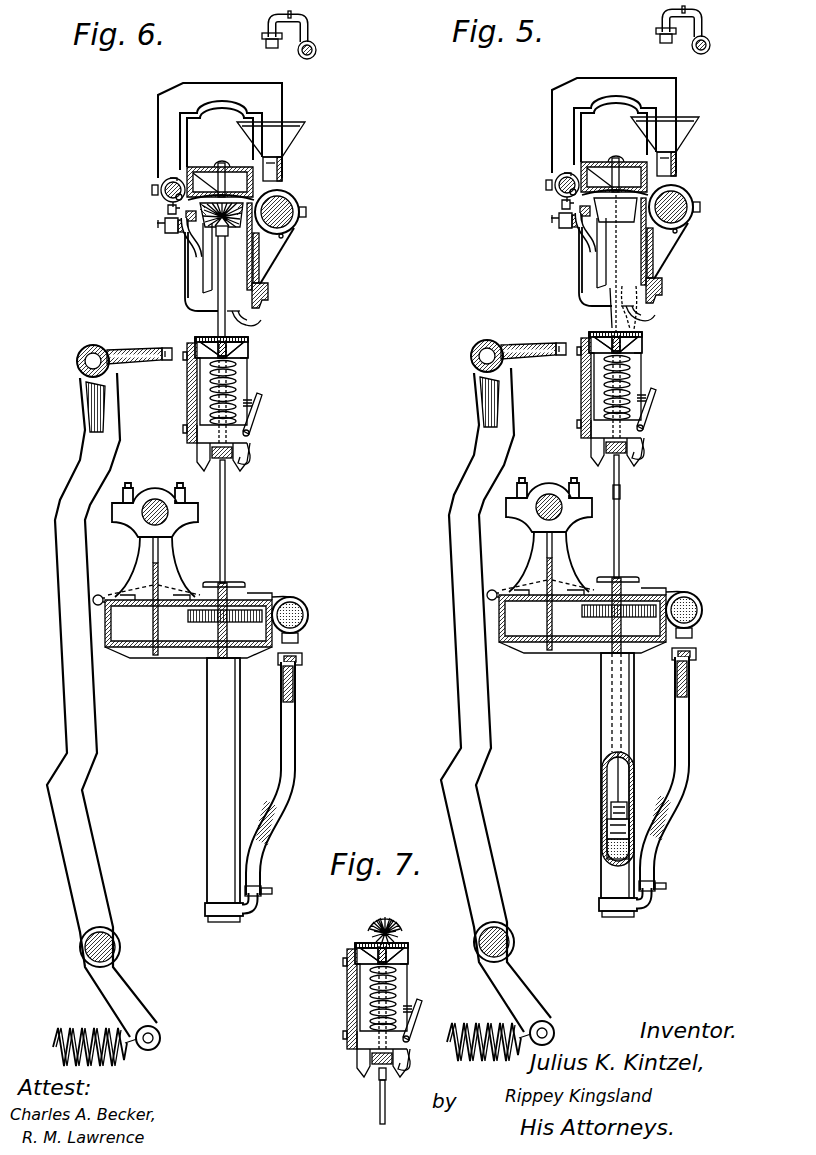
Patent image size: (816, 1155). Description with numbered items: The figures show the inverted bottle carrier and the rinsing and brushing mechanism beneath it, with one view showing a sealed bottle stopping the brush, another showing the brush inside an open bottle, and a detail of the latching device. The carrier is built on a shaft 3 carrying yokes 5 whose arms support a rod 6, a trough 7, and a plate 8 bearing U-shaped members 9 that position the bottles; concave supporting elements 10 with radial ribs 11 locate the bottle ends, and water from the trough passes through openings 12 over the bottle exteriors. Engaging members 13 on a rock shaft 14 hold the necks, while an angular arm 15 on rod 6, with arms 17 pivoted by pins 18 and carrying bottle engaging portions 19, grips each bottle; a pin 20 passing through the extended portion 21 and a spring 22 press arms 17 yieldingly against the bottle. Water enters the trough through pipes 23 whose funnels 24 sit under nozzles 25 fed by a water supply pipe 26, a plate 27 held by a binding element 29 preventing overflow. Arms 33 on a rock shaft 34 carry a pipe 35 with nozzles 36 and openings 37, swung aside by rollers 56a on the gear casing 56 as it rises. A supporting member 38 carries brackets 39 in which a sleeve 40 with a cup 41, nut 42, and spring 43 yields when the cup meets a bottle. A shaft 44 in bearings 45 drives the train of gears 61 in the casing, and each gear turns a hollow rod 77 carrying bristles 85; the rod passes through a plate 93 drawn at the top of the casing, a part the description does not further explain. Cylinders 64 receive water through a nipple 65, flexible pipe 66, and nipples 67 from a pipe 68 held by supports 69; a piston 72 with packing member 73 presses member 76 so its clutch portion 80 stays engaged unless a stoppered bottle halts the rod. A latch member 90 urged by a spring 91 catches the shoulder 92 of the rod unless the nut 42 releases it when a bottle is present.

In FIG. 6, the shaft 3 is at (297, 228).
In FIG. 5, the shaft 3 is at (682, 251).
In FIG. 6, the yokes 5 is at (220, 130).
In FIG. 5, the yokes 5 is at (614, 125).
In FIG. 6, the rod 6 is at (165, 193).
In FIG. 5, the rod 6 is at (540, 194).
In FIG. 6, the trough 7 is at (218, 192).
In FIG. 5, the trough 7 is at (568, 156).
In FIG. 6, the plate 8 is at (257, 240).
In FIG. 5, the plate 8 is at (669, 253).
In FIG. 6, the U-shaped members 9 is at (282, 225).
In FIG. 5, the U-shaped members 9 is at (686, 230).
In FIG. 6, the concave supporting elements 10 is at (188, 218).
In FIG. 5, the concave supporting elements 10 is at (547, 236).
In FIG. 6, the radial ribs 11 is at (290, 200).
In FIG. 5, the radial ribs 11 is at (690, 200).
In FIG. 6, the openings 12 is at (193, 172).
In FIG. 5, the openings 12 is at (565, 139).
In FIG. 6, the engaging members 13 is at (255, 325).
In FIG. 5, the engaging members 13 is at (660, 307).
In FIG. 6, the rock shaft 14 is at (268, 292).
In FIG. 5, the rock shaft 14 is at (678, 290).
In FIG. 6, the angular arm 15 is at (190, 302).
In FIG. 5, the angular arm 15 is at (607, 260).
In FIG. 6, the arms 17 is at (196, 250).
In FIG. 5, the arms 17 is at (569, 251).
In FIG. 6, the supporting pins 18 is at (177, 199).
In FIG. 5, the supporting pins 18 is at (523, 213).
In FIG. 6, the bottle engaging portions 19 is at (208, 275).
In FIG. 5, the bottle engaging portions 19 is at (571, 266).
In FIG. 6, the pin 20 is at (163, 225).
In FIG. 5, the pin 20 is at (538, 230).
In FIG. 6, the extended portion 21 is at (170, 213).
In FIG. 5, the extended portion 21 is at (523, 228).
In FIG. 6, the spring 22 is at (182, 226).
In FIG. 5, the spring 22 is at (556, 231).
In FIG. 6, the pipes 23 is at (275, 170).
In FIG. 5, the pipes 23 is at (687, 163).
In FIG. 6, the funnels 24 is at (271, 139).
In FIG. 5, the funnels 24 is at (665, 134).
In FIG. 6, the nozzles 25 is at (283, 40).
In FIG. 5, the nozzles 25 is at (677, 35).
In FIG. 6, the water supply pipe 26 is at (312, 56).
In FIG. 5, the water supply pipe 26 is at (718, 52).
In FIG. 6, the plate 27 is at (208, 167).
In FIG. 5, the plate 27 is at (614, 158).
In FIG. 6, the binding element 29 is at (229, 165).
In FIG. 5, the binding element 29 is at (628, 146).
In FIG. 6, the arms 33 is at (88, 668).
In FIG. 5, the arms 33 is at (491, 714).
In FIG. 6, the rock shaft 34 is at (110, 937).
In FIG. 5, the rock shaft 34 is at (514, 929).
In FIG. 6, the pipe 35 is at (88, 345).
In FIG. 5, the pipe 35 is at (481, 338).
In FIG. 6, the nozzles 36 is at (125, 350).
In FIG. 5, the nozzles 36 is at (528, 333).
In FIG. 6, the openings 37 is at (165, 348).
In FIG. 5, the openings 37 is at (549, 331).
In FIG. 6, the supporting member 38 is at (190, 392).
In FIG. 5, the supporting member 38 is at (593, 388).
In FIG. 7, the supporting member 38 is at (359, 999).
In FIG. 6, the brackets 39 is at (248, 345).
In FIG. 5, the brackets 39 is at (637, 337).
In FIG. 7, the brackets 39 is at (407, 947).
In FIG. 6, the sleeve 40 is at (228, 392).
In FIG. 5, the sleeve 40 is at (648, 387).
In FIG. 7, the sleeve 40 is at (427, 998).
In FIG. 6, the cup or hopper 41 is at (245, 355).
In FIG. 5, the cup or hopper 41 is at (668, 337).
In FIG. 7, the cup or hopper 41 is at (371, 933).
In FIG. 6, the nut or collar 42 is at (232, 462).
In FIG. 5, the nut or collar 42 is at (614, 465).
In FIG. 7, the nut or collar 42 is at (372, 1074).
In FIG. 6, the spring 43 is at (236, 375).
In FIG. 5, the spring 43 is at (647, 380).
In FIG. 7, the spring 43 is at (409, 991).
In FIG. 6, the shaft 44 is at (157, 500).
In FIG. 5, the shaft 44 is at (555, 481).
In FIG. 6, the bearings 45 is at (180, 505).
In FIG. 5, the bearings 45 is at (549, 517).
In FIG. 6, the gear casing 56 is at (185, 658).
In FIG. 5, the gear casing 56 is at (582, 630).
In FIG. 6, the rollers 56a is at (95, 603).
In FIG. 5, the rollers 56a is at (455, 614).
In FIG. 6, the train of gears 61 is at (153, 658).
In FIG. 5, the train of gears 61 is at (534, 606).
In FIG. 6, the cylinders 64 is at (215, 735).
In FIG. 5, the cylinders 64 is at (602, 785).
In FIG. 6, the nipple 65 is at (258, 908).
In FIG. 5, the nipple 65 is at (666, 899).
In FIG. 6, the flexible pipe 66 is at (295, 740).
In FIG. 5, the flexible pipe 66 is at (694, 773).
In FIG. 6, the nipples 67 is at (300, 640).
In FIG. 5, the nipples 67 is at (708, 643).
In FIG. 6, the pipe 68 is at (304, 614).
In FIG. 5, the pipe 68 is at (711, 607).
In FIG. 6, the supports 69 is at (300, 597).
In FIG. 5, the supports 69 is at (685, 595).
In FIG. 5, the piston 72 is at (595, 825).
In FIG. 5, the packing member 73 is at (595, 847).
In FIG. 5, the member 76 is at (640, 801).
In FIG. 6, the hollow rod 77 is at (226, 535).
In FIG. 5, the hollow rod 77 is at (616, 498).
In FIG. 7, the hollow rod 77 is at (365, 1102).
In FIG. 5, the clutch portion 80 is at (636, 809).
In FIG. 6, the bristles 85 is at (215, 217).
In FIG. 7, the bristles 85 is at (406, 931).
In FIG. 6, the latch member 90 is at (252, 455).
In FIG. 5, the latch member 90 is at (652, 452).
In FIG. 7, the latch member 90 is at (417, 1060).
In FIG. 6, the spring 91 is at (259, 402).
In FIG. 5, the spring 91 is at (668, 403).
In FIG. 7, the spring 91 is at (434, 1011).
In FIG. 5, the circumferential shoulder 92 is at (644, 487).
In FIG. 7, the circumferential shoulder 92 is at (397, 1084).
In FIG. 6, the plate 93 is at (240, 582).
In FIG. 5, the plate 93 is at (636, 564).